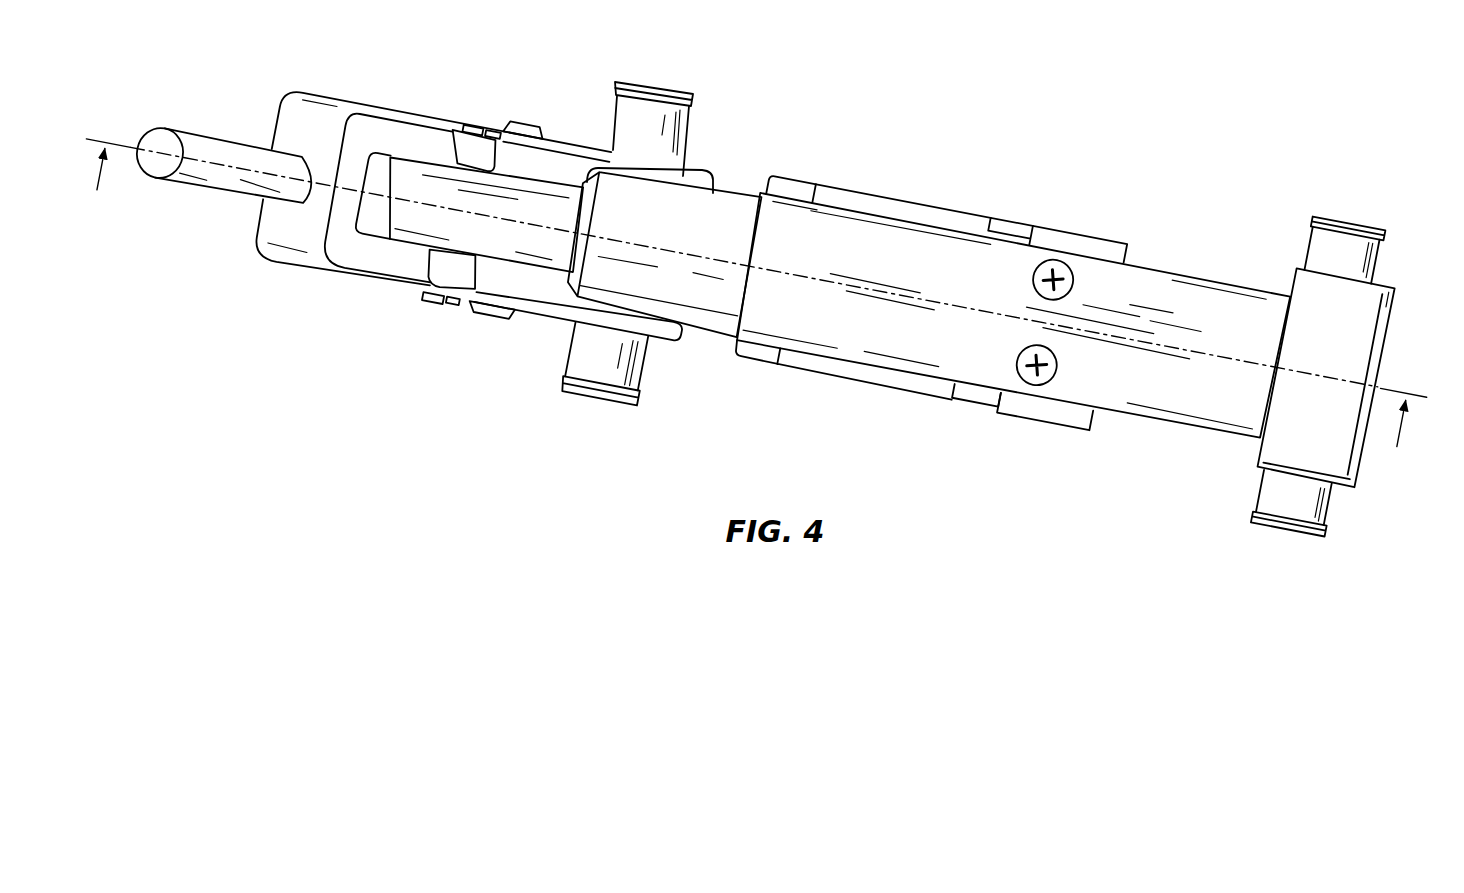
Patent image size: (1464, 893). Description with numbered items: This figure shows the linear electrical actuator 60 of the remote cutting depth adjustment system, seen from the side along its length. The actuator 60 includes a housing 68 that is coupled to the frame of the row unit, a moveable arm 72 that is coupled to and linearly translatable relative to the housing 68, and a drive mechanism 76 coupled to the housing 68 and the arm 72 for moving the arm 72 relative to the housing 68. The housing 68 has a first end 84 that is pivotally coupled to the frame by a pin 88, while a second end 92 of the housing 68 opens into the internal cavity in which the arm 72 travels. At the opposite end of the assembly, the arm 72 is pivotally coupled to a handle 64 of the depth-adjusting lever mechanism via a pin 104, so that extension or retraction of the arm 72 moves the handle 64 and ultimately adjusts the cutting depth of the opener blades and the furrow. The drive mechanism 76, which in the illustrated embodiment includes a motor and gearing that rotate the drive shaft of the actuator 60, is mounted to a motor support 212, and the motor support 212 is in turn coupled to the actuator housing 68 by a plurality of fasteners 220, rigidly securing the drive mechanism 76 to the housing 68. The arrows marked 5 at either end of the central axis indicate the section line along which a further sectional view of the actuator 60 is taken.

The section line 5- 5 is at (751, 307).
The actuator 60 is at (1059, 124).
The handle 64 is at (383, 130).
The housing 68 is at (1183, 394).
The moveable arm 72 is at (727, 210).
The drive mechanism 76 is at (877, 392).
The first end 84 is at (1399, 323).
The pin 88 is at (1290, 504).
The second end 92 is at (720, 336).
The pin 104 is at (436, 300).
The motor support 212 is at (1027, 411).
The fasteners 220 is at (1073, 279).